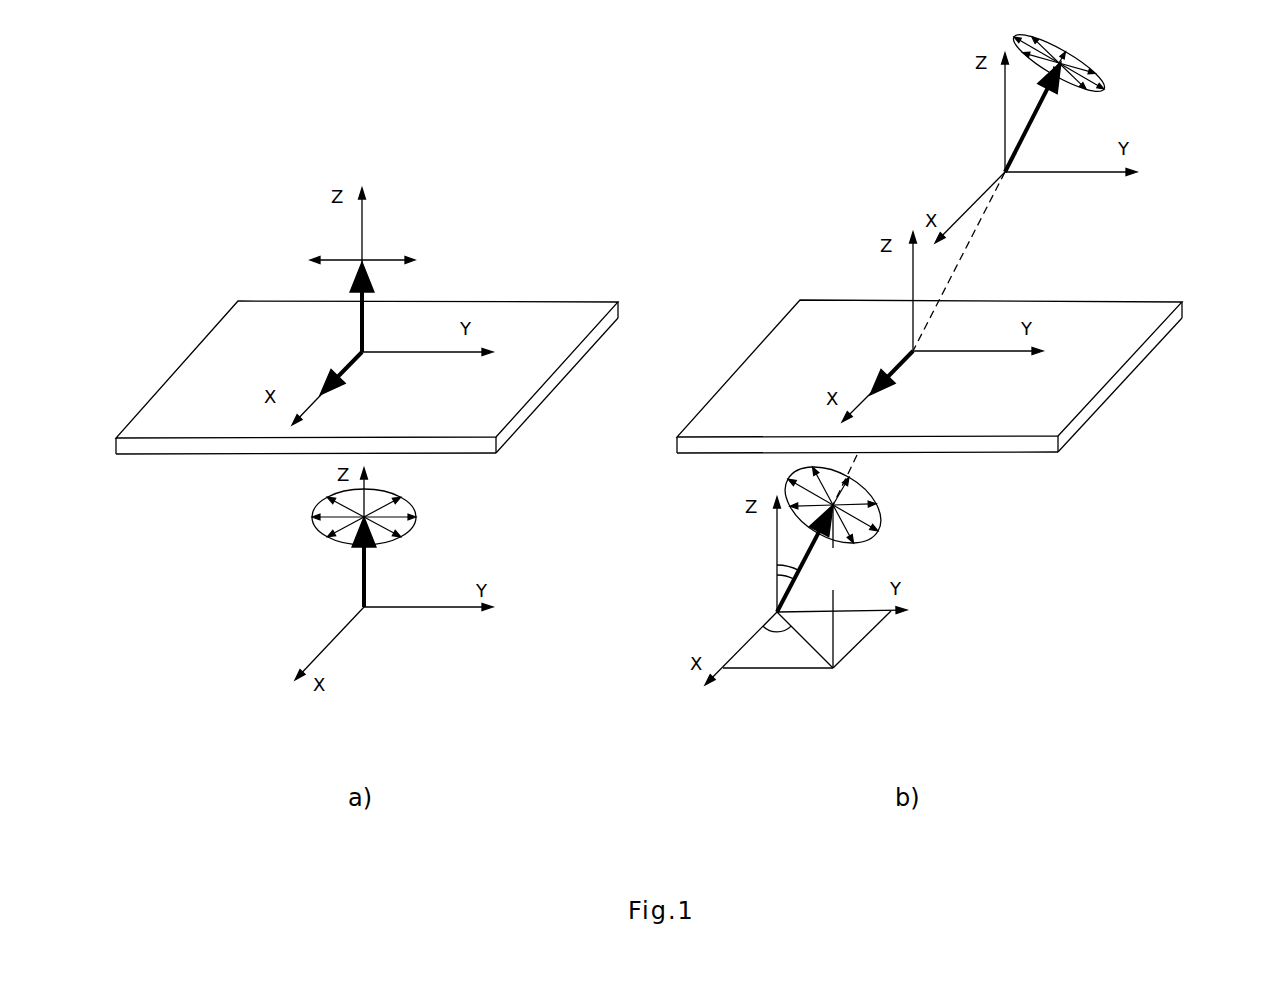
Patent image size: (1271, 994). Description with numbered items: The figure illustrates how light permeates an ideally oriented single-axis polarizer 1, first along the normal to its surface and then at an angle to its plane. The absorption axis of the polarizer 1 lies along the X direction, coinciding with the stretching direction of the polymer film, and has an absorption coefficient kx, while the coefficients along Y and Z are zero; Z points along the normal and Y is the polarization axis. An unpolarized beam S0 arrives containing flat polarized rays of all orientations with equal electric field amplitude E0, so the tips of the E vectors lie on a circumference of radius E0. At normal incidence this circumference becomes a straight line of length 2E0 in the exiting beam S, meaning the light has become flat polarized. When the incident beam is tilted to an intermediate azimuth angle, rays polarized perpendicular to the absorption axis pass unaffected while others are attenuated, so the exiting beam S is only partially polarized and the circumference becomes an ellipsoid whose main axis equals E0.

In FIG. 1a, the polarizer 1 is at (522, 320).
In FIG. 1b, the polarizer 1 is at (1047, 452).
In FIG. 1a, the exiting beam S is at (378, 307).
In FIG. 1b, the exiting beam S is at (1058, 99).
In FIG. 1a, the unpolarized light beam S0 is at (378, 562).
In FIG. 1b, the unpolarized light beam S0 is at (814, 558).
In FIG. 1a, the electric field amplitude E0 is at (384, 517).
In FIG. 1b, the electric field amplitude E0 is at (843, 504).
In FIG. 1a, the absorption coefficient kx is at (327, 370).
In FIG. 1b, the absorption coefficient kx is at (880, 370).
In FIG. 1a, the straight line of length 2E0 is at (379, 245).